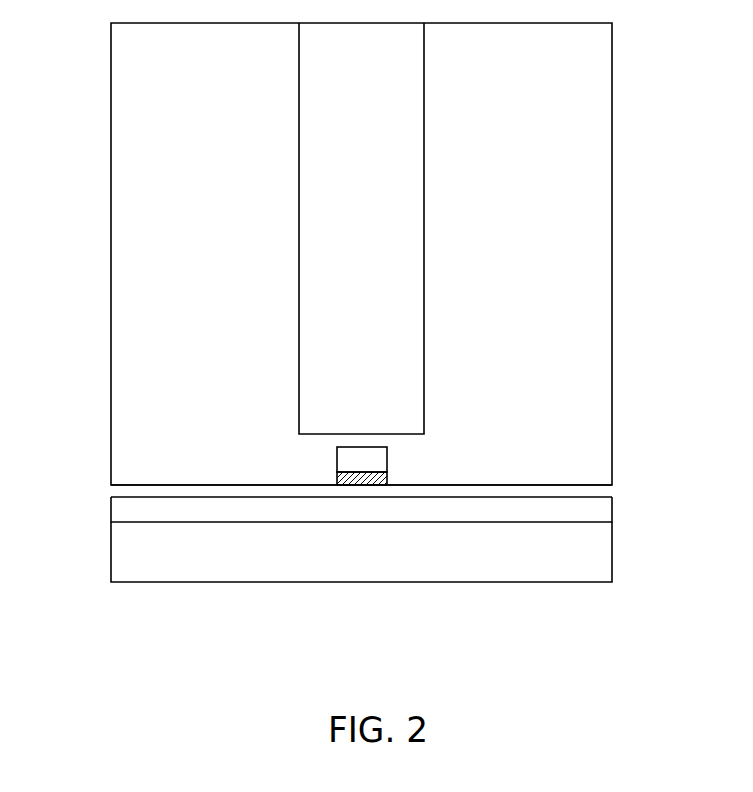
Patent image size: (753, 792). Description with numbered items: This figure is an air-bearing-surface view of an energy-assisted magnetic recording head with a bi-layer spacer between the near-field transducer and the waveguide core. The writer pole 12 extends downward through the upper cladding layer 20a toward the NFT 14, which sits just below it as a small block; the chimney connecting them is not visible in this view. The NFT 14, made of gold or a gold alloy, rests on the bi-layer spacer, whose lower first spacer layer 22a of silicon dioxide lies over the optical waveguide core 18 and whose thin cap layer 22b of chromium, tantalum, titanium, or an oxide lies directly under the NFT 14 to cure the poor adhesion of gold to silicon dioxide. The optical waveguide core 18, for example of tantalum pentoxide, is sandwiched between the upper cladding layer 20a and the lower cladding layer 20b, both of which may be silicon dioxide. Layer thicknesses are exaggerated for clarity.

The writer pole 12 is at (424, 97).
The NFT 14 is at (337, 463).
The optical waveguide core 18 is at (111, 509).
The upper cladding layer 20a is at (612, 158).
The lower cladding layer 20b is at (612, 547).
The first spacer layer 22a is at (612, 490).
The cap layer 22b is at (387, 479).